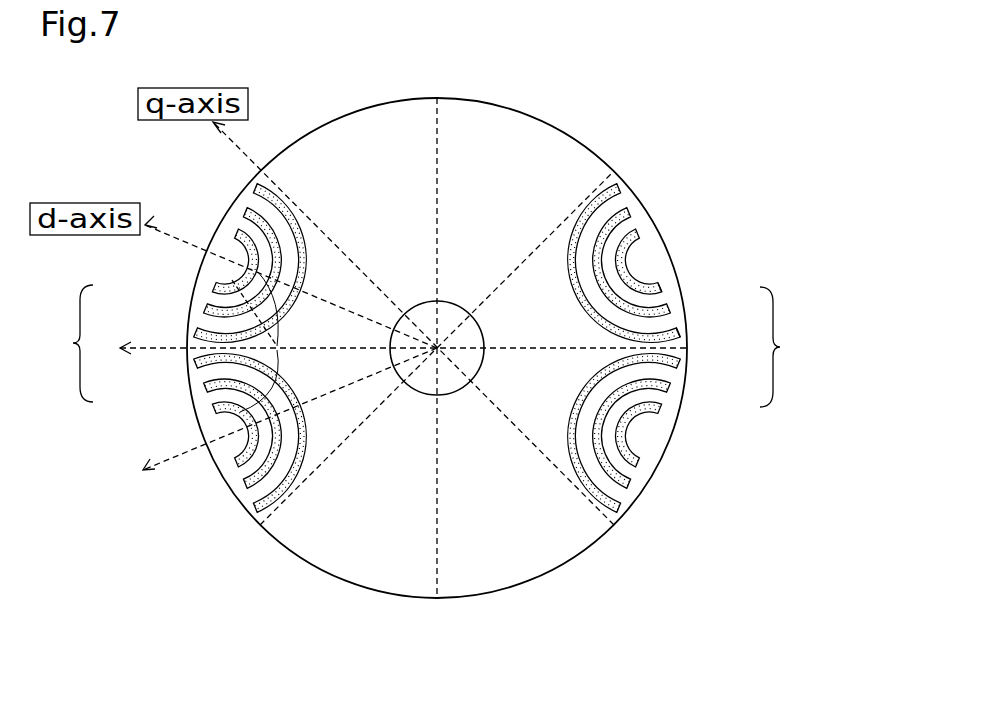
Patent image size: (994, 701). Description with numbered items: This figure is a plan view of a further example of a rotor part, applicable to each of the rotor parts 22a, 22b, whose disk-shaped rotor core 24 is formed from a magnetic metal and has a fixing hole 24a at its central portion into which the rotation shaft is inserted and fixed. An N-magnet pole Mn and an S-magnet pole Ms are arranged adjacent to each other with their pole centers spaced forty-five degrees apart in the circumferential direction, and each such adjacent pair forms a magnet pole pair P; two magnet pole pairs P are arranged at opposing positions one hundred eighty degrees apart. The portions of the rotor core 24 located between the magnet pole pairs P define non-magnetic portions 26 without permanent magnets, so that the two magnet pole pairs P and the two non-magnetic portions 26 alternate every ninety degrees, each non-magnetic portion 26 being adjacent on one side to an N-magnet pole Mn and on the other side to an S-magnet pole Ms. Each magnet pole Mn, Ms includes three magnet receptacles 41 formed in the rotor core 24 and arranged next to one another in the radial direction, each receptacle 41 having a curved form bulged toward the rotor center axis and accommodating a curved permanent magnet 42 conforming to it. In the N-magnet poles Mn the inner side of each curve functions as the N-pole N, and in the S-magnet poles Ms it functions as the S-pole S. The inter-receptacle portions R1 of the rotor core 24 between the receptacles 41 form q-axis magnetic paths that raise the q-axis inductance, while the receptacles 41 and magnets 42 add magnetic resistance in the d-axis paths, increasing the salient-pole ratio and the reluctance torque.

The rotor part 22a is at (683, 138).
The rotor part 22b is at (568, 112).
The rotor core 24 is at (507, 341).
The fixing hole 24a is at (413, 305).
The non-magnetic portion 26 is at (457, 108).
The magnet receptacle 41 is at (597, 237).
The permanent magnet 42 is at (580, 318).
The inter-receptacle portion R1 is at (303, 270).
The N-magnet pole Mn is at (188, 276).
The S-magnet pole Ms is at (188, 426).
The magnet pole pair P is at (427, 346).
The N-pole N is at (444, 343).
The S-pole S is at (443, 358).